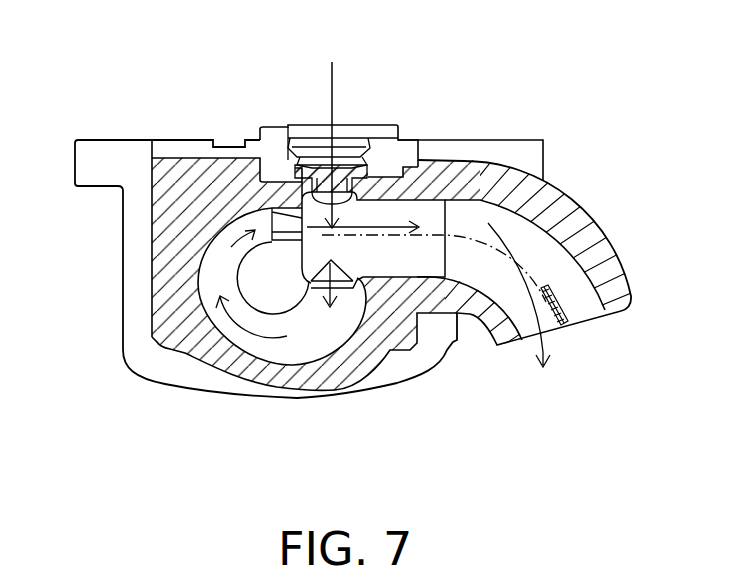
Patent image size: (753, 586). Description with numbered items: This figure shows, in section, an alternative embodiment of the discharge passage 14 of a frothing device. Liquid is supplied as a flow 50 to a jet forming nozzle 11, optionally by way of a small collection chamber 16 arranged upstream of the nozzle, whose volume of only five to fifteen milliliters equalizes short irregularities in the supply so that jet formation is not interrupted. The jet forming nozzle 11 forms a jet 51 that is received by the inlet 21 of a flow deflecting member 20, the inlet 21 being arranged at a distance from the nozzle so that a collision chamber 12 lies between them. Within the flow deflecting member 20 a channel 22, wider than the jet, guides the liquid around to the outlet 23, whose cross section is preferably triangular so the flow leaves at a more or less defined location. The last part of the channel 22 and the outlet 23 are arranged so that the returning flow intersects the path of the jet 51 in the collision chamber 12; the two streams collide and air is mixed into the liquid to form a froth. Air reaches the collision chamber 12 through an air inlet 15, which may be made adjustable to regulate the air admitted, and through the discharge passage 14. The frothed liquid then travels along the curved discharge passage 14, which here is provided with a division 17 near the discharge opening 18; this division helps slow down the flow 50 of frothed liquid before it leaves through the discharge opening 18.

The jet forming nozzle 11 is at (333, 138).
The collision chamber 12 is at (443, 195).
The discharge passage 14 is at (483, 222).
The air inlet 15 is at (393, 143).
The collection chamber 16 is at (317, 140).
The division 17 is at (560, 290).
The discharge opening 18 is at (548, 345).
The flow deflecting member 20 is at (182, 302).
The inlet 21 is at (347, 282).
The channel 22 is at (278, 350).
The outlet 23 is at (290, 215).
The flow 50 is at (335, 80).
The jet 51 is at (405, 197).